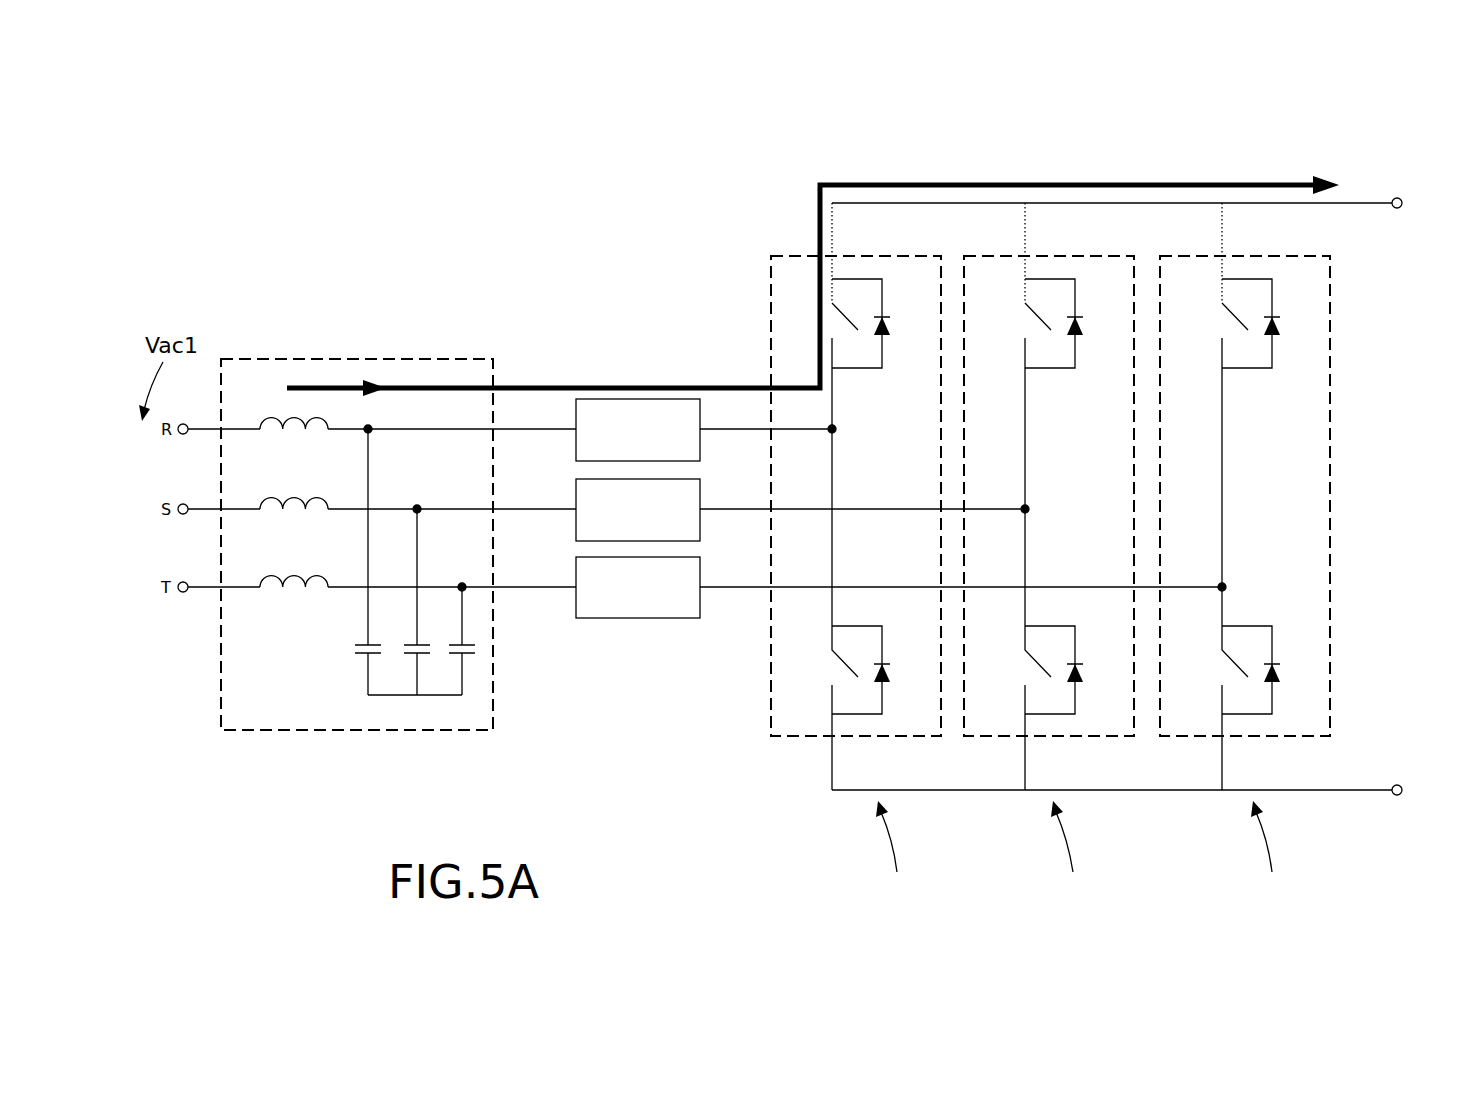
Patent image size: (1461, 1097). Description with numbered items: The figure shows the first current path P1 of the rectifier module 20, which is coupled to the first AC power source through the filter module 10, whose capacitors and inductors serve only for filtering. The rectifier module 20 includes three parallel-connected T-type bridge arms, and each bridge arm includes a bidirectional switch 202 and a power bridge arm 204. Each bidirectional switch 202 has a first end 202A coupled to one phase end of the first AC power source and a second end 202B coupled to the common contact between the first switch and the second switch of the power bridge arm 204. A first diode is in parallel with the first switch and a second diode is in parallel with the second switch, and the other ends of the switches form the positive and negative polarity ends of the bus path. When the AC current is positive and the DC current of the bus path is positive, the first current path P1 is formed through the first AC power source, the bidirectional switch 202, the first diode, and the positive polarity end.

The filter module 10 is at (420, 372).
The rectifier module 20 is at (1014, 523).
The bidirectional switch 202 is at (661, 446).
The first end 202A is at (538, 412).
The second end 202B is at (736, 412).
The power bridge arm 204 is at (790, 265).
The first current path P1 is at (1112, 183).